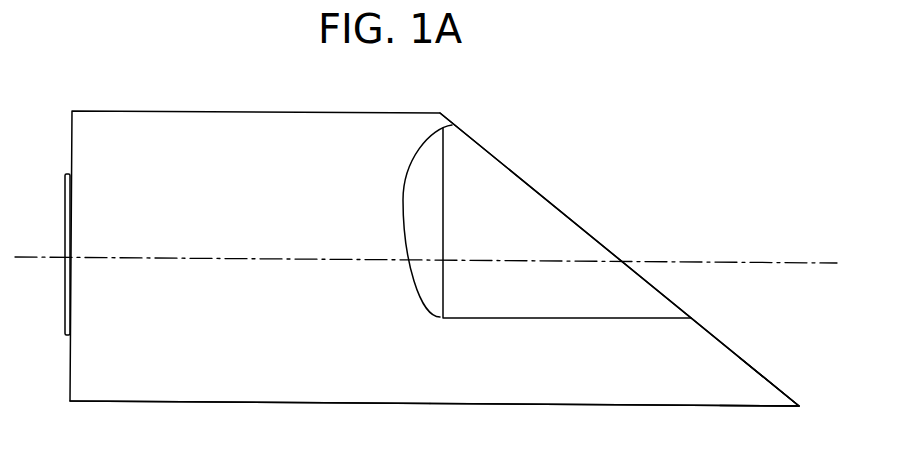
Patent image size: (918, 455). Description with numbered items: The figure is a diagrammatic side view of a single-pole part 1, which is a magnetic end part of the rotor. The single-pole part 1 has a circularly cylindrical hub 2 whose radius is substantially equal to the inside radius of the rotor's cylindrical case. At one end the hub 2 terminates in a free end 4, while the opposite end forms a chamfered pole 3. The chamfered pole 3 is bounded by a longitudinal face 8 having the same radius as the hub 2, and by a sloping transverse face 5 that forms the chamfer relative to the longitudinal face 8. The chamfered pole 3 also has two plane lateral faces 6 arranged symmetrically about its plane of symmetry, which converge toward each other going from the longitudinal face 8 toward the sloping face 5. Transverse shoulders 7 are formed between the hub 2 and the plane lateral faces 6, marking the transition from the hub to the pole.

The single-pole part 1 is at (186, 104).
The hub 2 is at (180, 392).
The chamfered pole 3 is at (729, 413).
The free end 4 is at (82, 358).
The sloping transverse face 5 is at (561, 210).
The plane lateral face 6 is at (508, 193).
The transverse shoulder 7 is at (423, 156).
The longitudinal face 8 is at (590, 405).